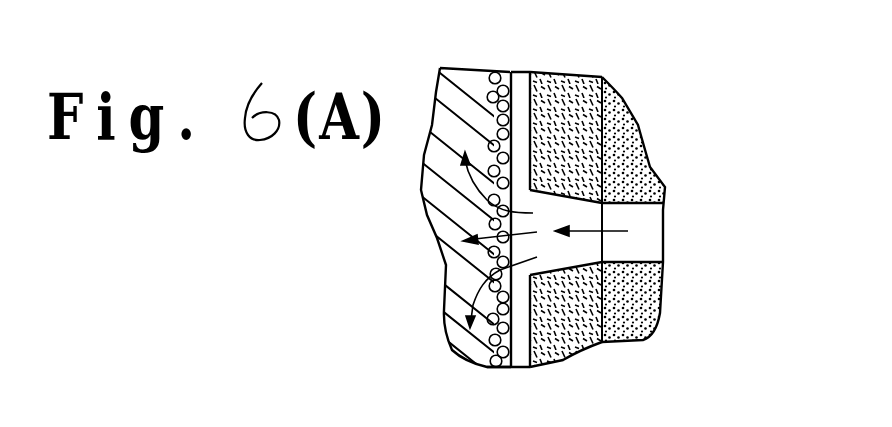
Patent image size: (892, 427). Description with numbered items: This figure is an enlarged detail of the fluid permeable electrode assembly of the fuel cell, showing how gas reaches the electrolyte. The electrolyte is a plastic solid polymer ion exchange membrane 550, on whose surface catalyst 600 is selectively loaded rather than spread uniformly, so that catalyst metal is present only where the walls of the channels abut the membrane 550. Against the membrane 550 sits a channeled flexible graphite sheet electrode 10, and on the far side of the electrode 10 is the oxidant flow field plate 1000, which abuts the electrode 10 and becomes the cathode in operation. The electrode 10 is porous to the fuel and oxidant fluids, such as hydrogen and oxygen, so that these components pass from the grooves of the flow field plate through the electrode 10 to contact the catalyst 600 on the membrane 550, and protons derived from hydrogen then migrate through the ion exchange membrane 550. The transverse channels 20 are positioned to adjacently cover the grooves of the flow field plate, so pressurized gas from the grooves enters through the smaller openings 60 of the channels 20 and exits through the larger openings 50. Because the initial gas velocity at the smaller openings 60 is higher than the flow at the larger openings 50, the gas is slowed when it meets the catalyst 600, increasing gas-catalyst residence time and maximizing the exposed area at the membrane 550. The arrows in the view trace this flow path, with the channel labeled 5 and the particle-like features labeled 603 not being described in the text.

The gas passage / channel 5 is at (520, 133).
The channeled flexible graphite sheet electrode 10 is at (583, 97).
The channel 20 is at (563, 365).
The larger opening 50 is at (530, 190).
The smaller opening 60 is at (602, 243).
The solid polymer ion exchange membrane 550 is at (460, 63).
The catalyst 600 is at (497, 338).
The spherical particles 603 is at (503, 72).
The oxidant flow field plate 1000 is at (630, 152).